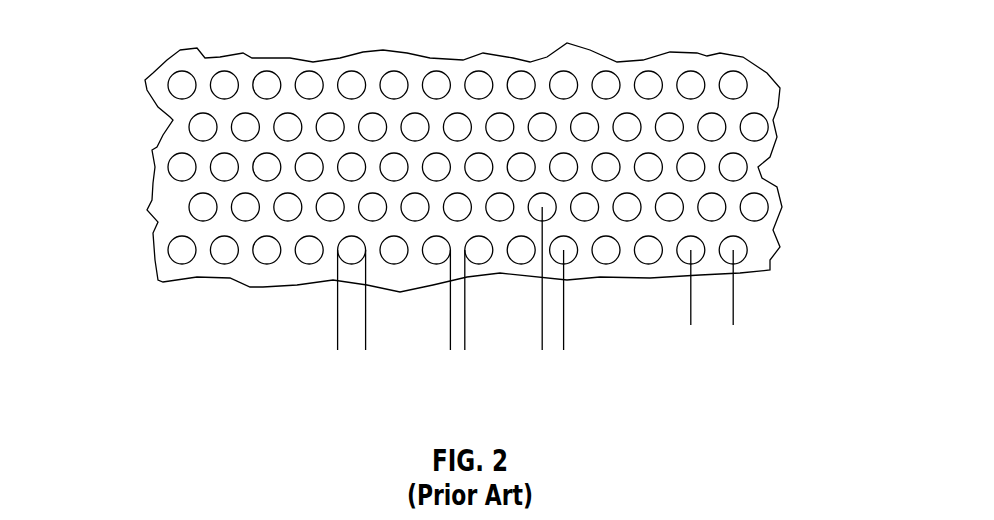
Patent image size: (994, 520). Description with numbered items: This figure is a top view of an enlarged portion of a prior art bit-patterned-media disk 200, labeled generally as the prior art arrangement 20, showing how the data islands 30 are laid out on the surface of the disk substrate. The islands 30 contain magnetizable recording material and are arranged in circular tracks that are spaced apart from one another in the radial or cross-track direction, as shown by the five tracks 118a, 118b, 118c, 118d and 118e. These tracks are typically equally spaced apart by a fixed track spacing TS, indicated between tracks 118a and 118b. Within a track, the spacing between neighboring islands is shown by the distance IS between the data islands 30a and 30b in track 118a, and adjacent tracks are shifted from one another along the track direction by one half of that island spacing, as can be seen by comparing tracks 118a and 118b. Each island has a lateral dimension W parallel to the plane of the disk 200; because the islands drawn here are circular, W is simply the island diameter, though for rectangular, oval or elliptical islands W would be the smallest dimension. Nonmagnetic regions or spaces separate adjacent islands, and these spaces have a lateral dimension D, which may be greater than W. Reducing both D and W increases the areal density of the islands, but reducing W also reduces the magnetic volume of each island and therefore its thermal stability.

The prior art filter assembly 20 is at (134, 192).
The disk 200 is at (262, 289).
The data islands 30 is at (351, 70).
The data island 30a is at (682, 252).
The data island 30b is at (737, 252).
The track 118a is at (86, 250).
The track 118b is at (86, 207).
The track 118c is at (86, 167).
The track 118d is at (86, 127).
The track 118e is at (86, 85).
The lateral dimension W is at (389, 337).
The lateral dimension of the spaces D is at (488, 337).
The island spacing IS is at (726, 315).
The track spacing TS is at (807, 215).